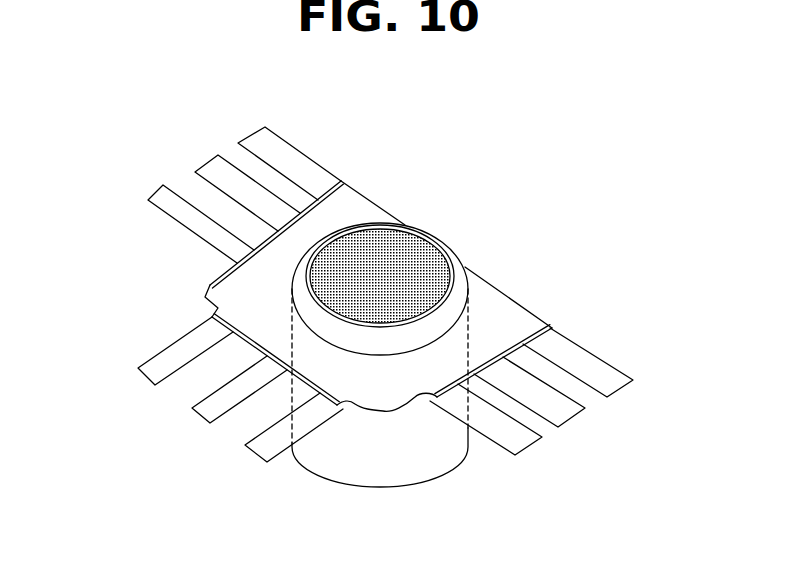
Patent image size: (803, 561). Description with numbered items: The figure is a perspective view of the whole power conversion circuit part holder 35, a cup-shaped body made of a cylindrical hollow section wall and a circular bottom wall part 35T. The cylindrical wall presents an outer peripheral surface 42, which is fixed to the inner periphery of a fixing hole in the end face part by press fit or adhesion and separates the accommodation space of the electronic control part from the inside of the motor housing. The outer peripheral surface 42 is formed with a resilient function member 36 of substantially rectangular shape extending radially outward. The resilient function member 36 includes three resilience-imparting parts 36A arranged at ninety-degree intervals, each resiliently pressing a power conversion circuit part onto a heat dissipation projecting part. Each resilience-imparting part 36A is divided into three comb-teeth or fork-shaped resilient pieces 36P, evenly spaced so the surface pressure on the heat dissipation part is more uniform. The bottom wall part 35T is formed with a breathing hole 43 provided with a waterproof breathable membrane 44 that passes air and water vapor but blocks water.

The power conversion circuit part holder 35 is at (517, 296).
The bottom wall part 35T is at (290, 282).
The resilient function member 36 is at (345, 207).
The resilience-imparting part 36A is at (270, 108).
The resilient piece 36P is at (163, 210).
The outer peripheral surface 42 is at (360, 455).
The breathing hole 43 is at (450, 249).
The waterproof breathable membrane 44 is at (410, 236).